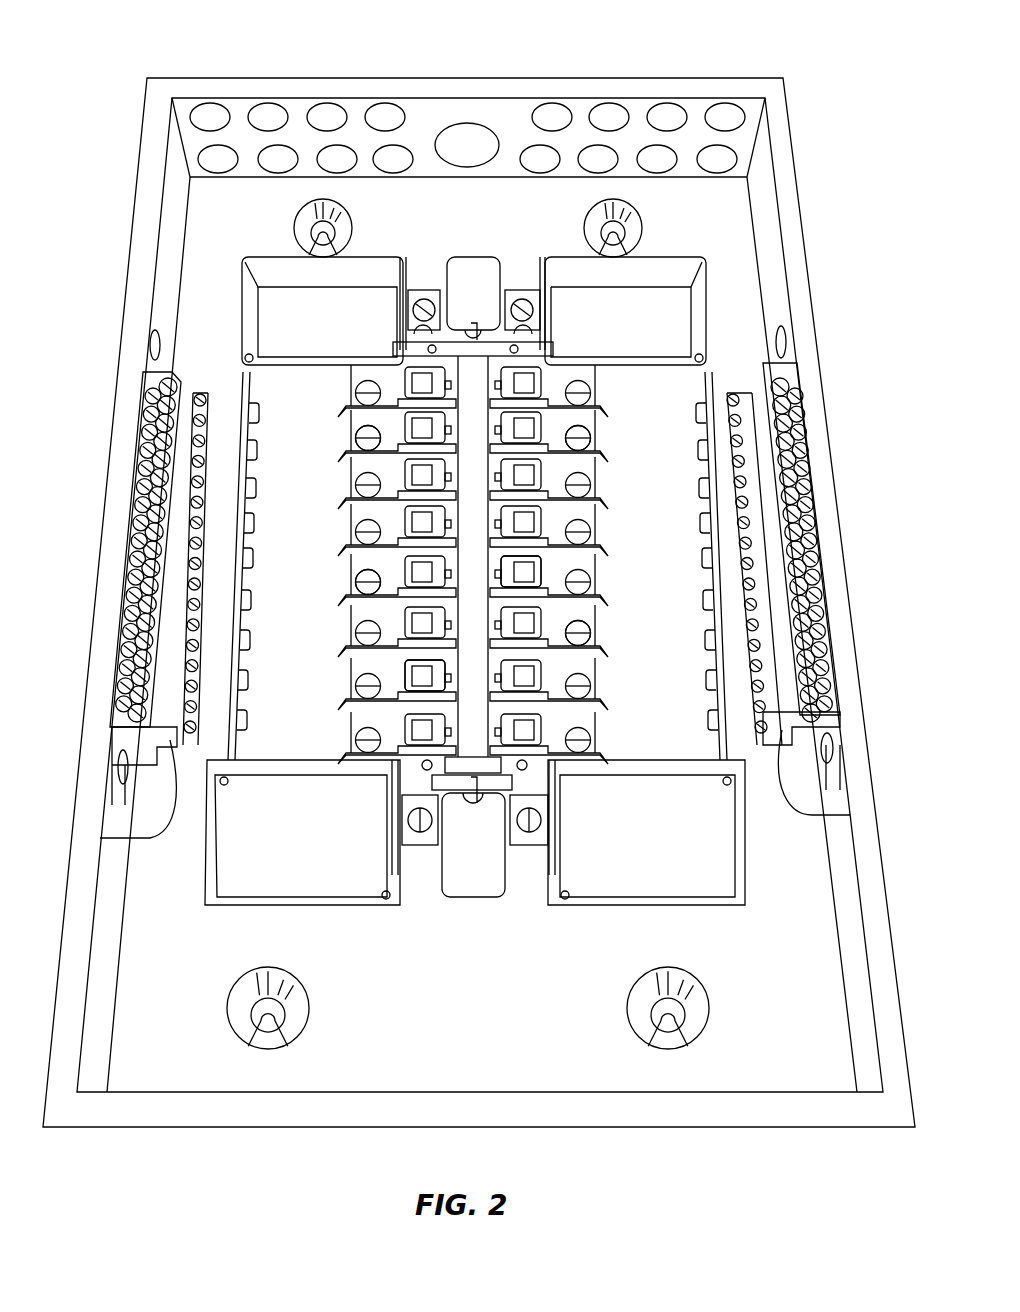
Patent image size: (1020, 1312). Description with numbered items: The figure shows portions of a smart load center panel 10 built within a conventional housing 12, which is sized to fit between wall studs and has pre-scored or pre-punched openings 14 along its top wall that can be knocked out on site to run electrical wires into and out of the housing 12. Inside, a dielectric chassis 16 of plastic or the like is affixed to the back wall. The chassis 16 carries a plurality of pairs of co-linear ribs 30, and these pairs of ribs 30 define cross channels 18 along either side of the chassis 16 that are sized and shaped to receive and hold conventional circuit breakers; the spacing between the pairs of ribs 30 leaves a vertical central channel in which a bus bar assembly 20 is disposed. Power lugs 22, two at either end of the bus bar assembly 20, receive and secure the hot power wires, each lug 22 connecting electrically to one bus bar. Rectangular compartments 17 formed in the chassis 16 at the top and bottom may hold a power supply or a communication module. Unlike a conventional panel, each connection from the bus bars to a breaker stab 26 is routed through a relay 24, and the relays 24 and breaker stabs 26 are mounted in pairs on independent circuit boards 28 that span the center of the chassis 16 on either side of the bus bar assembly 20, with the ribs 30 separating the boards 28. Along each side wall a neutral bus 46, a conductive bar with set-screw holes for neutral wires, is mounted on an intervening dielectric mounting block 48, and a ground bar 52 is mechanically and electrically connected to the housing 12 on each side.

The smart load center panel 10 is at (843, 80).
The housing 12 is at (793, 216).
The openings 14 is at (597, 155).
The dielectric chassis 16 is at (311, 539).
The rectangular compartments 17 is at (356, 298).
The cross channels 18 is at (635, 688).
The bus bar assembly 20 is at (475, 750).
The power lugs 22 is at (517, 298).
The relay 24 is at (528, 580).
The breaker stabs 26 is at (568, 476).
The circuit boards 28 is at (598, 640).
The ribs 30 is at (396, 456).
The neutral bus 46 is at (165, 410).
The dielectric mounting block 48 is at (788, 405).
The ground bar 52 is at (100, 838).